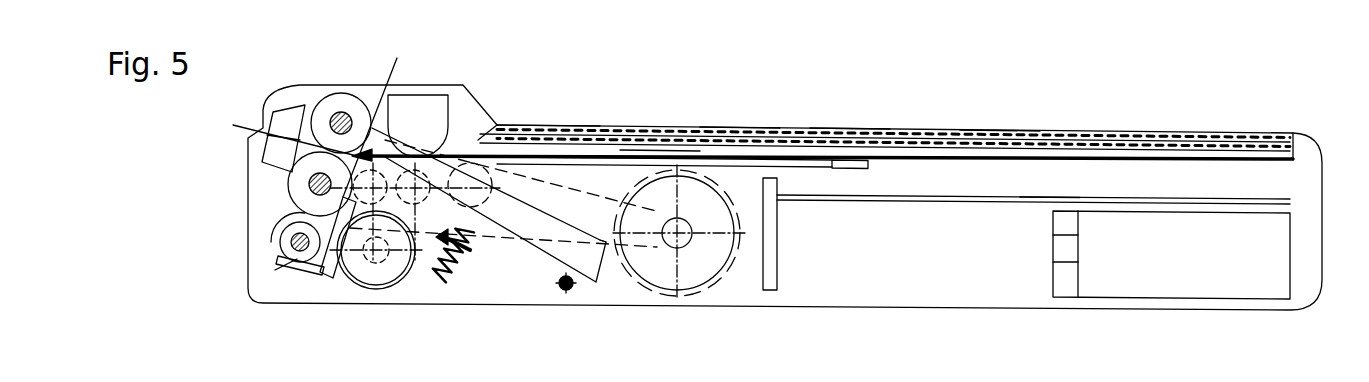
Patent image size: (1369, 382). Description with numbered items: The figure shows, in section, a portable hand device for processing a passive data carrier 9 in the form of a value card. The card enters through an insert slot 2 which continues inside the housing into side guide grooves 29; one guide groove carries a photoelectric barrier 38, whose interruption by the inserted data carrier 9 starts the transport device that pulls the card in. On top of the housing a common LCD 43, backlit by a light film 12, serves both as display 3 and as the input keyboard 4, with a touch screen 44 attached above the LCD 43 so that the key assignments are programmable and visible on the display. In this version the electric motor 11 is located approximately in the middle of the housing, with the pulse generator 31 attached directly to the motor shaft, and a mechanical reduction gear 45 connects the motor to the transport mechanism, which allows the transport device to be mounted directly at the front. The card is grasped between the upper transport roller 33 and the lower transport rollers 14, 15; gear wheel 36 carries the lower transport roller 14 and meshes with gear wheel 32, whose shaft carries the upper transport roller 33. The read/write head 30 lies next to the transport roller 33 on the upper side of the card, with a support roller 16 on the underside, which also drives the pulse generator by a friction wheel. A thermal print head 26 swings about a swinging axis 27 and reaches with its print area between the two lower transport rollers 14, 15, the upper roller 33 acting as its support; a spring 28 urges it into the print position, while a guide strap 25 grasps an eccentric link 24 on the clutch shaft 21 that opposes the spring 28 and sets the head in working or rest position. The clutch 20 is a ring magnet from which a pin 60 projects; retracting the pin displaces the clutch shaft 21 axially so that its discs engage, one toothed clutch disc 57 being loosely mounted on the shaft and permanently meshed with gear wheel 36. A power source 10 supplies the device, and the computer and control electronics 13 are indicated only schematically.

The insert slot 2 is at (258, 119).
The display 3 is at (590, 112).
The input keyboard 4 is at (997, 115).
The data carrier 9 is at (233, 125).
The power source 10 is at (1185, 237).
The electric motor 11 is at (688, 270).
The light film 12 is at (940, 198).
The computer and control electronics 13 is at (1050, 200).
The lower transport roller 14 is at (230, 184).
The second lower transport roller 15 is at (230, 184).
The support roller 16 is at (505, 125).
The clutch 20 is at (359, 287).
The clutch shaft 21 is at (268, 173).
The eccentric link 24 is at (285, 223).
The guide strap 25 is at (295, 272).
The thermal print head 26 is at (498, 243).
The swinging axis 27 is at (568, 290).
The spring 28 is at (437, 260).
The side guide grooves 29 is at (655, 162).
The read/write head 30 is at (442, 105).
The pulse generator 31 is at (775, 290).
The gear wheel 32 is at (339, 85).
The upper transport roller 33 is at (327, 102).
The gear wheel 36 is at (312, 184).
The photoelectric barrier 38 is at (267, 95).
The LCD 43 is at (730, 128).
The touch screen 44 is at (845, 129).
The reduction gear 45 is at (606, 243).
The clutch disc 57 is at (215, 293).
The pin 60 is at (377, 258).